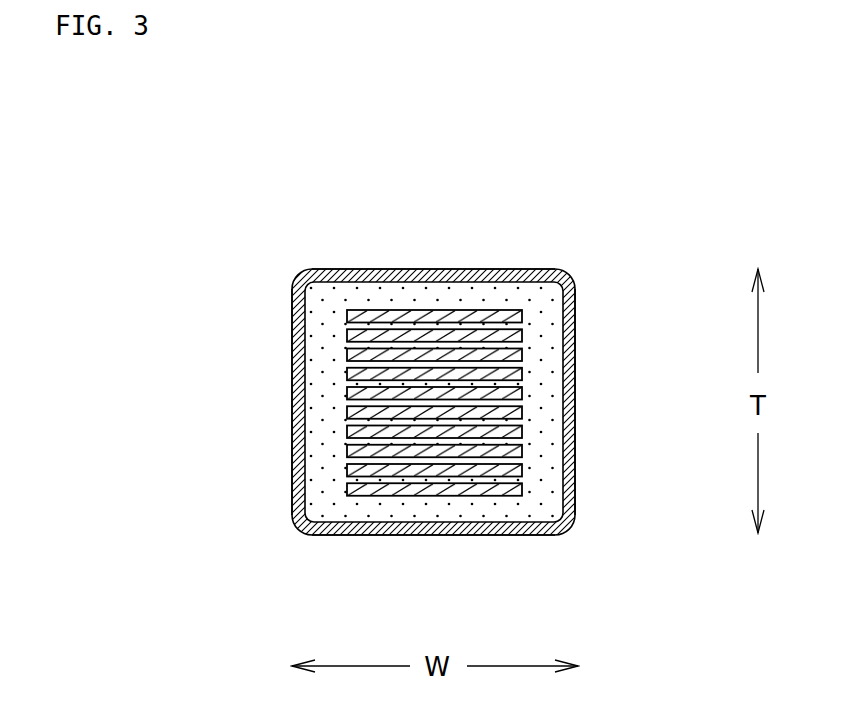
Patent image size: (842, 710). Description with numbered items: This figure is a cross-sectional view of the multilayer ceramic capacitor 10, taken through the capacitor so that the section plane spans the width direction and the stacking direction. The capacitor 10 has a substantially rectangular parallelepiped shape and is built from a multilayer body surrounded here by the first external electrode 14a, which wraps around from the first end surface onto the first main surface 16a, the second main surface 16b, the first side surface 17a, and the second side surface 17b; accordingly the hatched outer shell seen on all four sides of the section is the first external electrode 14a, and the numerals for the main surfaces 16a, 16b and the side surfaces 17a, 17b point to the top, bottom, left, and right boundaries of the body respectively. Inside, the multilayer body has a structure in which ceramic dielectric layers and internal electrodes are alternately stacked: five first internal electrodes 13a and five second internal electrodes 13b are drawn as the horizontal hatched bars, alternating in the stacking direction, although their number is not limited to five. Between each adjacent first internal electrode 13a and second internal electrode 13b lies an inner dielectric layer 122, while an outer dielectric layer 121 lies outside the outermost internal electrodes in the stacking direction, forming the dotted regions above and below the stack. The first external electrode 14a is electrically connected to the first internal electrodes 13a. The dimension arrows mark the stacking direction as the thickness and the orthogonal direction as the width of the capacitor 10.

The multilayer ceramic capacitor 10 is at (433, 358).
The outer dielectric layer 121 is at (428, 298).
The inner dielectric layer 122 is at (441, 399).
The first internal electrode 13a is at (503, 353).
The second internal electrode 13b is at (512, 458).
The first external electrode 14a is at (296, 433).
The first main surface 16a is at (343, 268).
The second main surface 16b is at (433, 537).
The first side surface 17a is at (295, 358).
The second side surface 17b is at (573, 355).